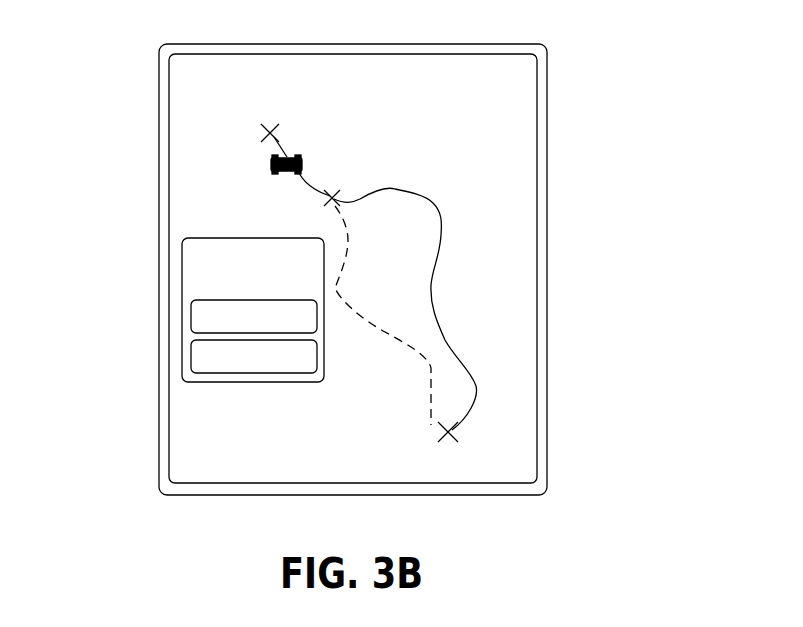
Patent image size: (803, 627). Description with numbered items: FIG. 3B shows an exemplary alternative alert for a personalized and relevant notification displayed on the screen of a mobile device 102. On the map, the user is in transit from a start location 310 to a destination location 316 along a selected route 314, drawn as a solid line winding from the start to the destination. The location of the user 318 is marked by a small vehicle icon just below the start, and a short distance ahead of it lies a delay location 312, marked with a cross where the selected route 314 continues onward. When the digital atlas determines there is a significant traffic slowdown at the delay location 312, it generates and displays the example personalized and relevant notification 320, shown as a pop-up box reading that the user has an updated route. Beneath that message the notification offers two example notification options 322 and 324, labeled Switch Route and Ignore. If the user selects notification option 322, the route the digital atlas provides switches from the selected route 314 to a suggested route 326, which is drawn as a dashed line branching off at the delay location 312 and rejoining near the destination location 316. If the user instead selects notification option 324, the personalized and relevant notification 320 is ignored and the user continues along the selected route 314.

The mobile device 102 is at (155, 150).
The start location 310 is at (297, 115).
The delay location 312 is at (336, 194).
The selected route 314 is at (435, 204).
The destination location 316 is at (433, 432).
The location of the user 318 is at (265, 171).
The personalized and relevant notification 320 is at (182, 293).
The notification option 322 is at (185, 322).
The notification option 324 is at (187, 360).
The suggested route 326 is at (337, 279).